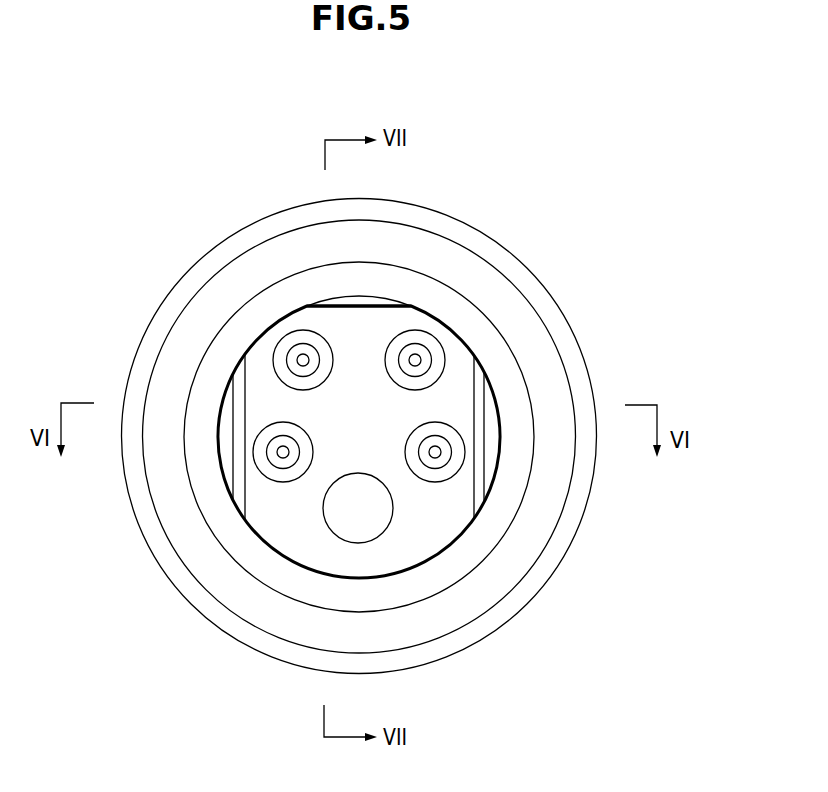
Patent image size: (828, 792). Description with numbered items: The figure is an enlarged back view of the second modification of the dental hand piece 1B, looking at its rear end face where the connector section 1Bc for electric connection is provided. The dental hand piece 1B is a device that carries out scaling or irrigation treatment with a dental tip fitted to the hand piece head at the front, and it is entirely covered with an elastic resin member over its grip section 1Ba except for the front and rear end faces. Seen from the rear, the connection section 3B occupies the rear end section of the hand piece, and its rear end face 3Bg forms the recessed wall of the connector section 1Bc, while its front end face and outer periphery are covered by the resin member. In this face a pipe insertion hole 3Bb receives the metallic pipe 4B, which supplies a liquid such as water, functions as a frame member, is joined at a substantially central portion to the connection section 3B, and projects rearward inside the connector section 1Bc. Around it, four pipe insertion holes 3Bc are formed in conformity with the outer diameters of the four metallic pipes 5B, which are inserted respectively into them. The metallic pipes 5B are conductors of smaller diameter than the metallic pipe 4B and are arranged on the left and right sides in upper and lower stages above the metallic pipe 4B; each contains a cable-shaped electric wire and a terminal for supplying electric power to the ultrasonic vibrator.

The dental hand piece 1B is at (608, 180).
The grip section 1Ba is at (435, 237).
The connector section 1Bc is at (517, 353).
The connection section 3B is at (223, 583).
The pipe insertion hole 3Bb is at (380, 502).
The pipe insertion holes 3Bc is at (306, 433).
The rear end face 3Bg is at (442, 502).
The metallic pipe 4B is at (358, 523).
The metallic pipes 5B is at (283, 452).